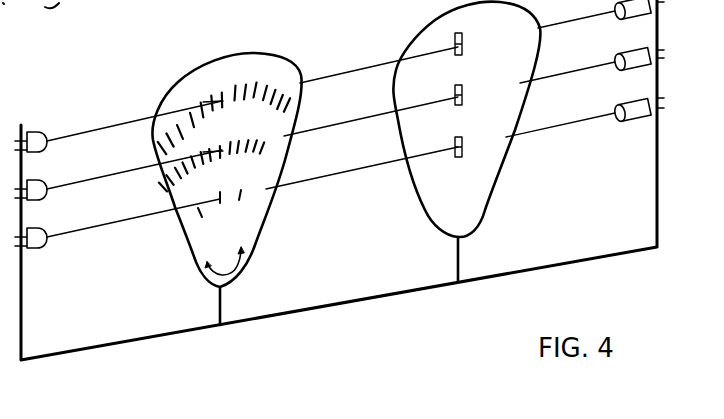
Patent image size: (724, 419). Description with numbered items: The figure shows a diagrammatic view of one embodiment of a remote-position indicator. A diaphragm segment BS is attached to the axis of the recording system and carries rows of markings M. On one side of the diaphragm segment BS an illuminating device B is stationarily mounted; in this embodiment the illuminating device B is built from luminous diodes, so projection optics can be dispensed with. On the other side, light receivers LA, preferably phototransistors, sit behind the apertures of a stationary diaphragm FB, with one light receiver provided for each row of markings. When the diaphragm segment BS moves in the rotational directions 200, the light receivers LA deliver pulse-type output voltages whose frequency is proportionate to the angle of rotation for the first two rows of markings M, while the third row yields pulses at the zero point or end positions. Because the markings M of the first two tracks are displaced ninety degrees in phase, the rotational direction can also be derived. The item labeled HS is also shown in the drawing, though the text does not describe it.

The illuminating device B is at (335, 198).
The light receiver LA is at (638, 145).
The diaphragm segment BS is at (226, 210).
The marking M is at (264, 148).
The high score indicator HS is at (241, 196).
The rotational direction 200 is at (242, 267).
The stationary diaphragm FB is at (466, 163).